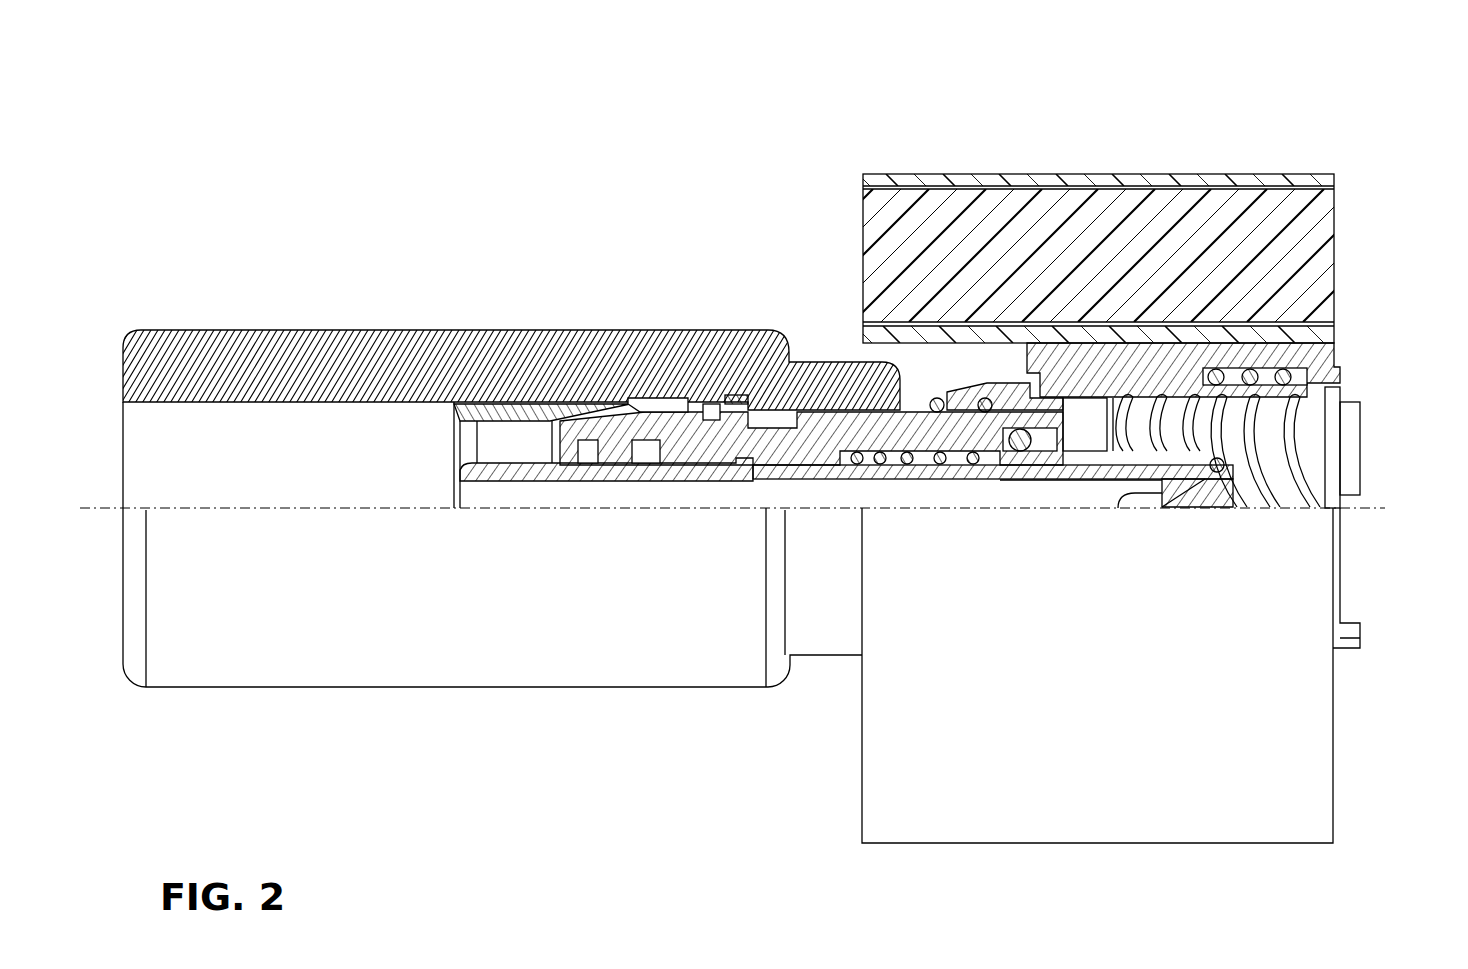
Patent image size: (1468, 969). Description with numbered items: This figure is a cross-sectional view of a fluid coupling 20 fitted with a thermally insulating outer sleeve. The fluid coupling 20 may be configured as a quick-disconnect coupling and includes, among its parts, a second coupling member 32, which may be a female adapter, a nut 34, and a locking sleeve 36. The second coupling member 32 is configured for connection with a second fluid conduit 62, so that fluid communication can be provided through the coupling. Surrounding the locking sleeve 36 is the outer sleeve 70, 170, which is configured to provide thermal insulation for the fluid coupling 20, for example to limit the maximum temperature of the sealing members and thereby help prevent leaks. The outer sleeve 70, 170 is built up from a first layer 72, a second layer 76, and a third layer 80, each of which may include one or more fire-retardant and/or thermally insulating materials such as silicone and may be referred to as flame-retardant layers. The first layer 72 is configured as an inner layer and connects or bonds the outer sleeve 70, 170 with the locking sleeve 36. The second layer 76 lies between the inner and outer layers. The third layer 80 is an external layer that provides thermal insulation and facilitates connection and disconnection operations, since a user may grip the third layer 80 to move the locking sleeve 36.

The fluid coupling 20 is at (483, 143).
The second coupling member 32 is at (703, 443).
The nut 34 is at (1317, 403).
The locking sleeve 36 is at (1320, 352).
The second fluid conduit 62 is at (528, 467).
The outer sleeve 70 is at (1062, 192).
The hose 170 is at (1062, 229).
The first layer 72 is at (862, 333).
The second layer 76 is at (862, 257).
The third layer 80 is at (862, 182).